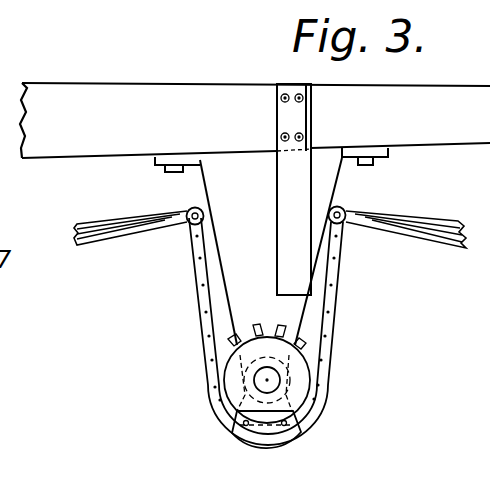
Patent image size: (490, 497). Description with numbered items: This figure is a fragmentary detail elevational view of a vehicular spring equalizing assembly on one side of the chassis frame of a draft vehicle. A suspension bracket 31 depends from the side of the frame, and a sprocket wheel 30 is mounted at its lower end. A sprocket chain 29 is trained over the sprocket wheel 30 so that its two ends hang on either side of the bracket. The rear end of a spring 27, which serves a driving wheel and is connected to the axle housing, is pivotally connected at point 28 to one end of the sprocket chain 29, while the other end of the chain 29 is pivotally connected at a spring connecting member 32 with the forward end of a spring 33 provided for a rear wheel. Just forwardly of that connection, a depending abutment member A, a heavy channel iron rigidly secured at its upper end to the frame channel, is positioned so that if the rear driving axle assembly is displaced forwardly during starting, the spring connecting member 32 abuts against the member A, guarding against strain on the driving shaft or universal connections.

The depending abutment member A is at (298, 95).
The spring 27 is at (126, 228).
The pivot point 28 is at (190, 228).
The sprocket chain 29 is at (207, 308).
The sprocket wheel 30 is at (300, 385).
The suspension bracket 31 is at (327, 184).
The spring connecting member 32 is at (345, 224).
The spring 33 is at (443, 233).